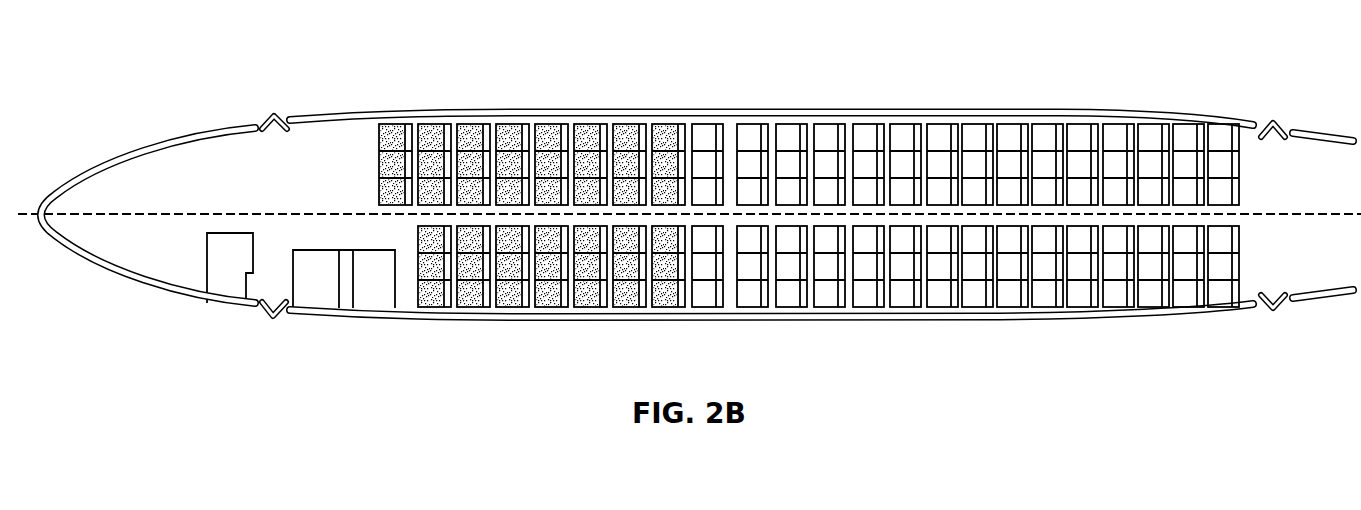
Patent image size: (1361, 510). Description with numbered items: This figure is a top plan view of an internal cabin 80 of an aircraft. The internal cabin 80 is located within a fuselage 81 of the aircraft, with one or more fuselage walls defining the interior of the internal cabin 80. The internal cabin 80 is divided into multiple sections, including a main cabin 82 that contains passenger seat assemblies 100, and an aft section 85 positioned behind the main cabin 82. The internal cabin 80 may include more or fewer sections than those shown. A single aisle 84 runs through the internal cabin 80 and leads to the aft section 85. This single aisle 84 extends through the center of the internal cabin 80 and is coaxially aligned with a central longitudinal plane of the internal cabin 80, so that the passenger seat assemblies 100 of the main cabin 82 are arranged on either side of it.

The internal cabin 80 is at (291, 53).
The fuselage 81 is at (497, 117).
The main cabin 82 is at (433, 143).
The passenger seat assemblies 100 is at (704, 145).
The single aisle 84 is at (829, 210).
The aft section 85 is at (1260, 147).